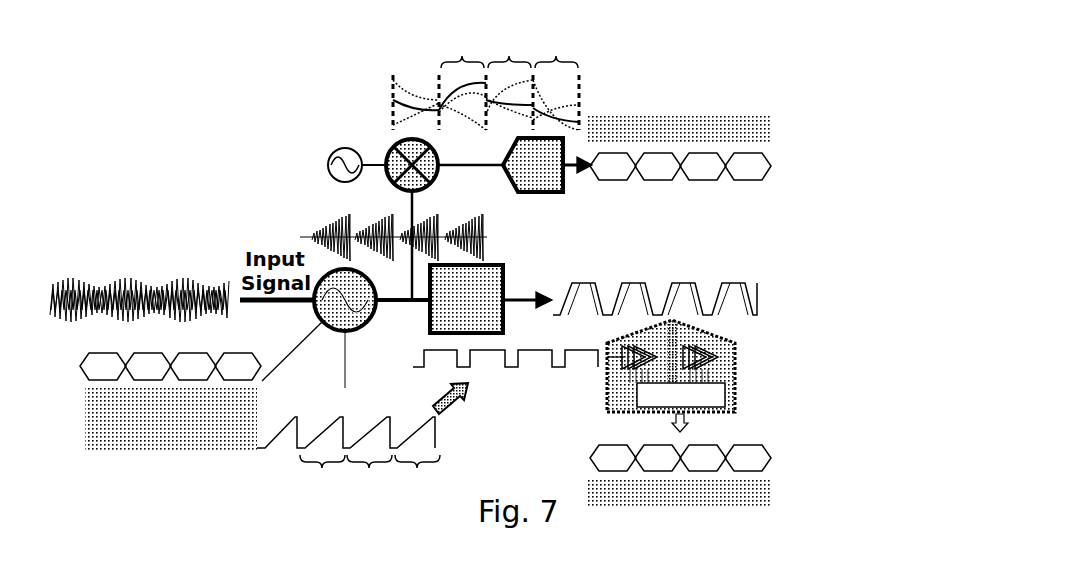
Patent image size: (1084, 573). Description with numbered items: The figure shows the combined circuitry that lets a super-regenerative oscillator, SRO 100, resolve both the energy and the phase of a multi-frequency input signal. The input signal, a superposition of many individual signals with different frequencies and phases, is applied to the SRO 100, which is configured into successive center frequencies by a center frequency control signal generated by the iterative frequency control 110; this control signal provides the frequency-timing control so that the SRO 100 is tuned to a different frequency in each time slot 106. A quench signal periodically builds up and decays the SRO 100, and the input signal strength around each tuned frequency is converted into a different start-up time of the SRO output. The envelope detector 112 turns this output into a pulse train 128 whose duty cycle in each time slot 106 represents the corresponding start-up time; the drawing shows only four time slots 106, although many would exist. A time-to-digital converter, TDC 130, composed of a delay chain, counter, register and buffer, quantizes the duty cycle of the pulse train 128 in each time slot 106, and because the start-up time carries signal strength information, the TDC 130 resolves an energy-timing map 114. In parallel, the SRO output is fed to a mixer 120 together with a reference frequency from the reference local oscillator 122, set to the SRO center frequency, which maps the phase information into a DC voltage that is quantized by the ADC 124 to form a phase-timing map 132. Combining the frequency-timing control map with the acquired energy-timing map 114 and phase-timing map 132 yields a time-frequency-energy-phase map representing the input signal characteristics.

The super-regenerative oscillator (SRO) 100 is at (353, 330).
The time slot 106 is at (403, 266).
The iterative frequency control 110 is at (177, 391).
The envelope detector 112 is at (503, 267).
The energy-timing map 114 is at (782, 480).
The mixer 120 is at (436, 182).
The reference local oscillator 122 is at (328, 164).
The ADC 124 is at (555, 192).
The pulse train 128 is at (764, 265).
The time-to-digital converter (TDC) 130 is at (721, 376).
The phase-timing map 132 is at (782, 115).